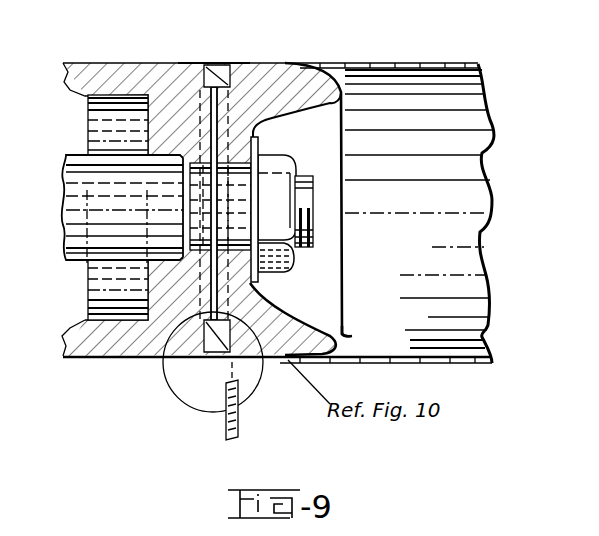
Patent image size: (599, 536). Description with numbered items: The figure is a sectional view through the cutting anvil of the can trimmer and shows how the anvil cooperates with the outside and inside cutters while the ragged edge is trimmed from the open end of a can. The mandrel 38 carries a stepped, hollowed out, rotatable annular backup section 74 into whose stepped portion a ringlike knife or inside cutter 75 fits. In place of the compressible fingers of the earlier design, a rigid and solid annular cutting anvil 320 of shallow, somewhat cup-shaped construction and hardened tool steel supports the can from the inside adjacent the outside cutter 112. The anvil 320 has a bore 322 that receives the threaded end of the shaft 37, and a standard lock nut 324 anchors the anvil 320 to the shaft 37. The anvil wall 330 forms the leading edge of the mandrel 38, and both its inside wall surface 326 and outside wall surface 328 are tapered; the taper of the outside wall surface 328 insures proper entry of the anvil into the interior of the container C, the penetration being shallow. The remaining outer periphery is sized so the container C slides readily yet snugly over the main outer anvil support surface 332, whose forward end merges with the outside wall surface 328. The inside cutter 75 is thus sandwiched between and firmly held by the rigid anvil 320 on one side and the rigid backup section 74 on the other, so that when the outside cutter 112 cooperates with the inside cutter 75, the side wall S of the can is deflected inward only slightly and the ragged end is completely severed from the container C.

The backup section 74 is at (123, 72).
The inside cutter 75 is at (218, 70).
The mandrel 38 is at (76, 100).
The shaft 37 is at (123, 223).
The main outer anvil support surface 332 is at (262, 63).
The bore 322 is at (259, 157).
The cutting anvil 320 is at (352, 247).
The lock nut 324 is at (282, 262).
The inside wall surface 326 is at (335, 340).
The anvil wall 330 is at (350, 330).
The outside wall surface 328 is at (342, 356).
The outside cutter 112 is at (238, 415).
The side wall S is at (278, 367).
The container C is at (462, 370).